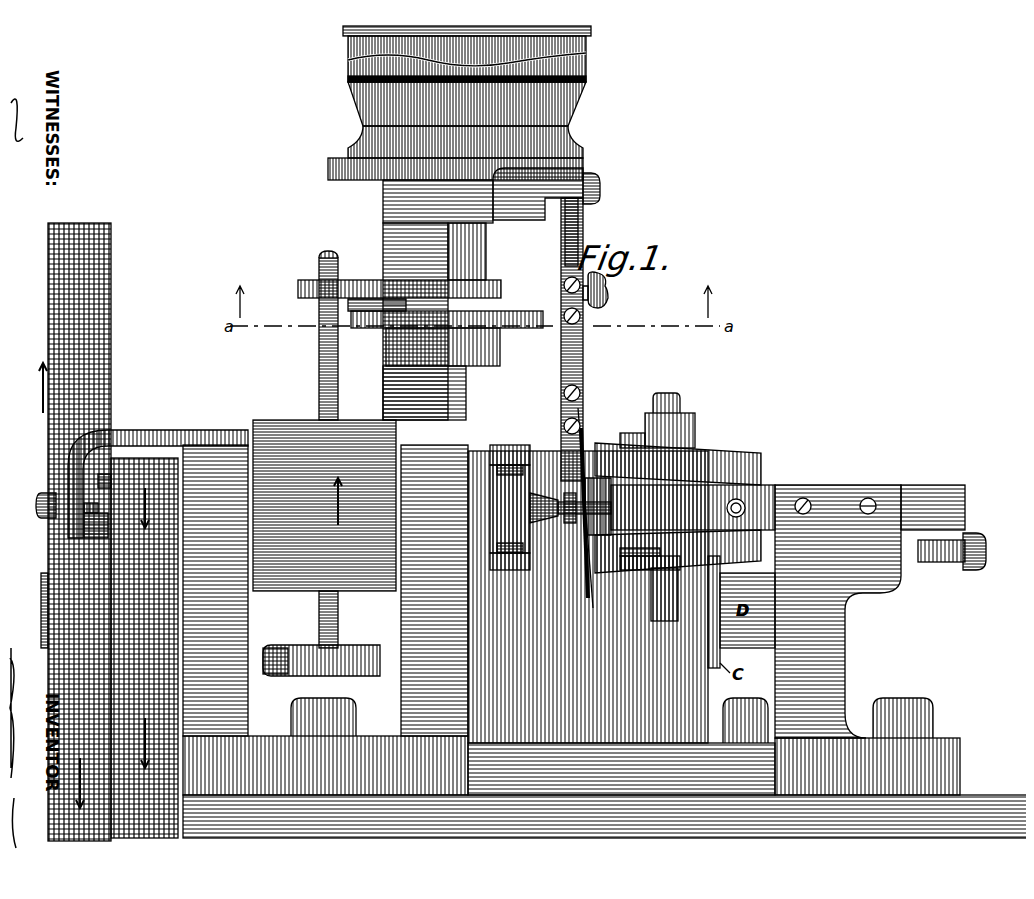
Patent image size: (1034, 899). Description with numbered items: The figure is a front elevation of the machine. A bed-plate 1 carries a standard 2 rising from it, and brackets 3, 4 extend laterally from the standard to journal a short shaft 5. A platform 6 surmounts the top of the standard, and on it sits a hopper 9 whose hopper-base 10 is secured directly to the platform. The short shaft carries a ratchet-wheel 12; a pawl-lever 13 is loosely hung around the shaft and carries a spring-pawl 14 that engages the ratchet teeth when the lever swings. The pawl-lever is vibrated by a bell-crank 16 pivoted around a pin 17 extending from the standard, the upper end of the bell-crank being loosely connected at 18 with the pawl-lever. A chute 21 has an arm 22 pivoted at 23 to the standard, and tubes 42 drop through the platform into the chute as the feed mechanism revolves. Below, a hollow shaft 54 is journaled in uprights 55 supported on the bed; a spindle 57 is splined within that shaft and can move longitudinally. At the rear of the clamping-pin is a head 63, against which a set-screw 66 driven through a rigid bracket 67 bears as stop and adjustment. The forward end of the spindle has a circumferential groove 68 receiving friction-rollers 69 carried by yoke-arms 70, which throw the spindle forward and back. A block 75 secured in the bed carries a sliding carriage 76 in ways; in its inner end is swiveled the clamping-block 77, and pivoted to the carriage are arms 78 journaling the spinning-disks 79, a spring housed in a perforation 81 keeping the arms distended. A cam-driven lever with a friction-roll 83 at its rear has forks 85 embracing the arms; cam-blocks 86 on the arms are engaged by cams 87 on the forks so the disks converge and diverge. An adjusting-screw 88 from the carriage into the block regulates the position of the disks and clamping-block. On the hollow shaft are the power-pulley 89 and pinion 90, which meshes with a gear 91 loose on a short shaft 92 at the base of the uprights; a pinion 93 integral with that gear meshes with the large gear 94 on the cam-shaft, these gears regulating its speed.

The bed-plate 1 is at (604, 816).
The standard 2 is at (375, 240).
The bracket 3 is at (525, 212).
The bracket 4 is at (492, 340).
The short shaft 5 is at (478, 245).
The platform 6 is at (320, 165).
The hopper 9 is at (578, 50).
The hopper-base 10 is at (575, 135).
The ratchet-wheel 12 is at (505, 302).
The pawl-lever 13 is at (493, 275).
The spring-pawl 14 is at (360, 303).
The bell-crank 16 is at (311, 395).
The pin 17 is at (265, 640).
The loose connection 18 is at (319, 263).
The chute 21 is at (575, 322).
The arm 22 is at (570, 228).
The pivot 23 is at (592, 182).
The tube 42 is at (575, 500).
The shaft 54 is at (85, 515).
The uprights 55 is at (325, 590).
The spindle 57 is at (90, 472).
The head 63 is at (76, 500).
The set-screw 66 is at (28, 497).
The rigid bracket 67 is at (130, 430).
The circumferential groove 68 is at (524, 509).
The friction-rollers 69 is at (522, 452).
The yoke-arms 70 is at (500, 437).
The block 75 is at (867, 640).
The sliding carriage 76 is at (957, 495).
The clamping-block 77 is at (592, 470).
The arms 78 is at (730, 455).
The spinning-disks 79 is at (580, 430).
The perforation 81 is at (640, 550).
The friction-roll 83 is at (640, 562).
The forks 85 is at (643, 590).
The cam-blocks 86 is at (700, 428).
The cams 87 is at (620, 425).
The adjusting-screw 88 is at (978, 545).
The power-pulley 89 is at (324, 505).
The pinion 90 is at (150, 450).
The gear 91 is at (140, 620).
The short shaft 92 is at (178, 768).
The pinion 93 is at (62, 720).
The large gear 94 is at (64, 532).